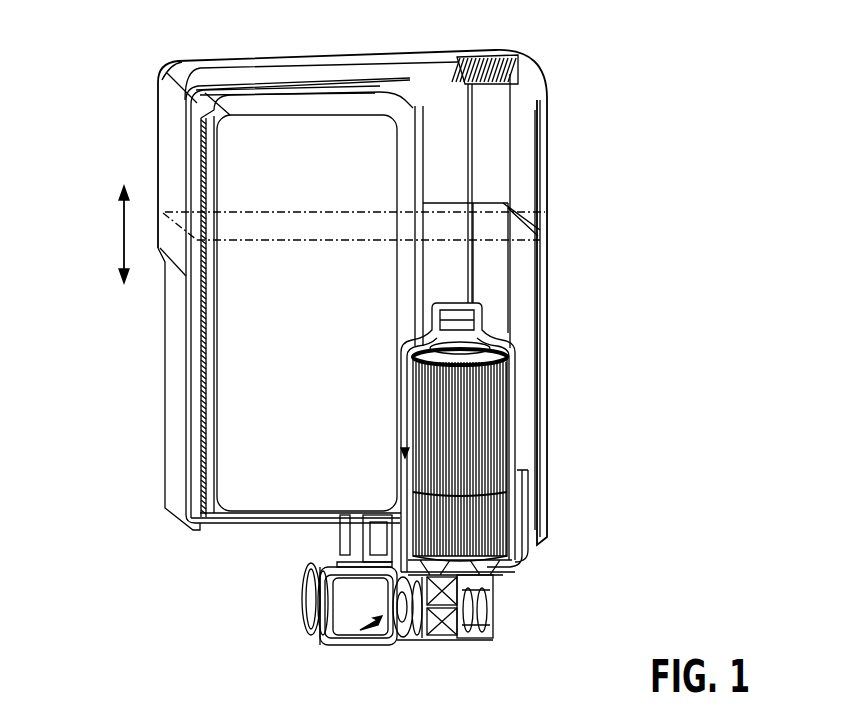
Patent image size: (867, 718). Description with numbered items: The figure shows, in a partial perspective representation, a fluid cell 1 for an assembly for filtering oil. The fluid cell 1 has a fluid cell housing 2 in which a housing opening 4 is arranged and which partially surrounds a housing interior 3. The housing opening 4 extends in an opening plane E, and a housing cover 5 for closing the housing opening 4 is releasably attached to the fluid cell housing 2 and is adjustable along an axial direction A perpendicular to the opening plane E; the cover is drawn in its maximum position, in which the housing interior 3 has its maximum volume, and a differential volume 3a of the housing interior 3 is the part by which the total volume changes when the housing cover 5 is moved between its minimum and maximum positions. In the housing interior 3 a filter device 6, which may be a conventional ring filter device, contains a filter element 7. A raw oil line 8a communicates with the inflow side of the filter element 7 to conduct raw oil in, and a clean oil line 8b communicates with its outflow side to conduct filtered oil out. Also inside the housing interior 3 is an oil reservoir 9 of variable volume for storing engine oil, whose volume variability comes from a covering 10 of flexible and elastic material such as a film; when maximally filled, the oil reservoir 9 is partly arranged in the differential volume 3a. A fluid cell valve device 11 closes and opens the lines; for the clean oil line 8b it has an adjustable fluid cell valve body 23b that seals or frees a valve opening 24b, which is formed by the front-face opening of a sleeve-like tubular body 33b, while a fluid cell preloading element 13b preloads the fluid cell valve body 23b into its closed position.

The fluid cell 1 is at (679, 137).
The fluid cell housing 2 is at (547, 344).
The housing interior 3 is at (458, 272).
The differential volume 3a is at (508, 169).
The housing opening 4 is at (493, 223).
The housing cover 5 is at (550, 157).
The filter device 6 is at (516, 417).
The filter element 7 is at (495, 445).
The raw oil line 8a is at (302, 590).
The clean oil line 8b is at (318, 618).
The oil reservoir 9 is at (310, 299).
The covering 10 is at (297, 113).
The fluid cell valve device 11 is at (343, 647).
The fluid cell preloading element 13b is at (487, 640).
The fluid cell valve body 23b is at (397, 600).
The valve opening 24b is at (400, 622).
The tubular body 33b is at (432, 638).
The axial direction A is at (122, 238).
The opening plane E is at (314, 222).